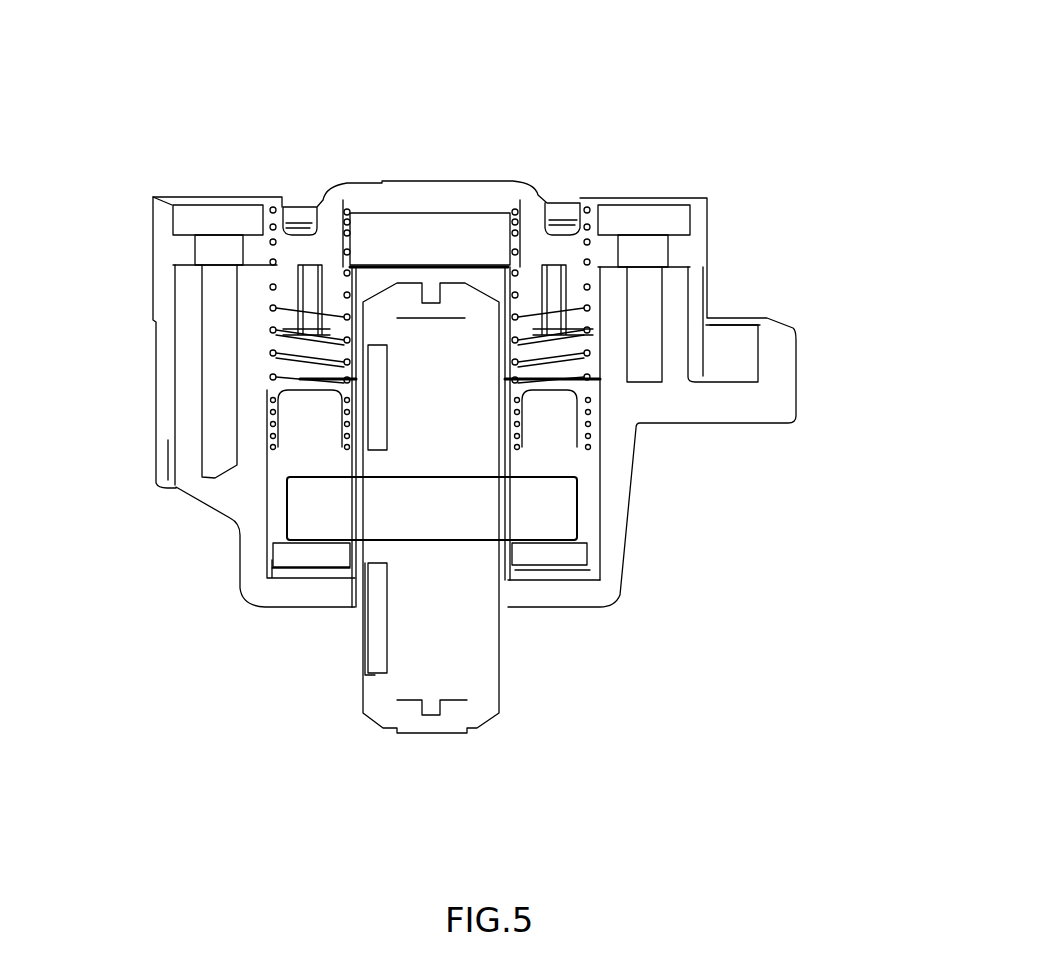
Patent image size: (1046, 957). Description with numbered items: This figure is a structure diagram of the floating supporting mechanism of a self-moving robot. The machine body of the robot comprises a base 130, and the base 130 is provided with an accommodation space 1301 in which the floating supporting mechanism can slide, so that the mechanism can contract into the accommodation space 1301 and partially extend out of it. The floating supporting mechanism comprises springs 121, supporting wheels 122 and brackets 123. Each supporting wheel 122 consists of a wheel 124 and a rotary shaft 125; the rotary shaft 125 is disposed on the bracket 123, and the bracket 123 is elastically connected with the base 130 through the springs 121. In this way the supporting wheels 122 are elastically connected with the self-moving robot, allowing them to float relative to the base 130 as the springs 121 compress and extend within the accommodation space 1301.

The spring 121 is at (597, 292).
The supporting wheel 122 is at (397, 465).
The bracket 123 is at (570, 551).
The wheel 124 is at (453, 640).
The rotary shaft 125 is at (555, 505).
The base 130 is at (470, 202).
The accommodation space 1301 is at (378, 283).